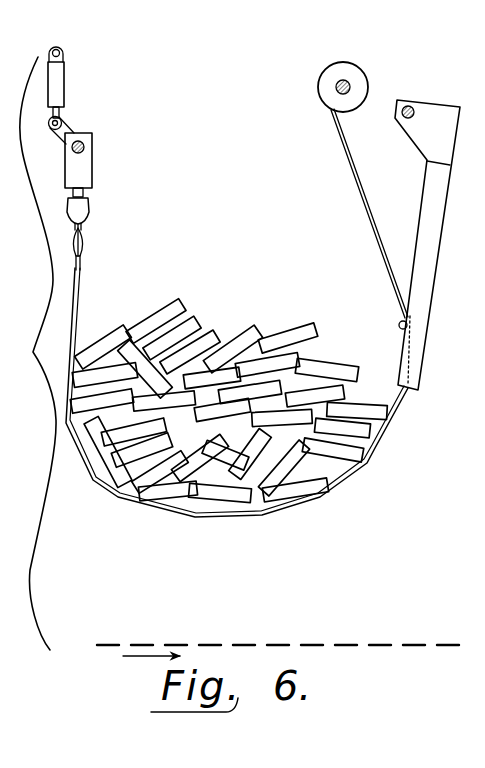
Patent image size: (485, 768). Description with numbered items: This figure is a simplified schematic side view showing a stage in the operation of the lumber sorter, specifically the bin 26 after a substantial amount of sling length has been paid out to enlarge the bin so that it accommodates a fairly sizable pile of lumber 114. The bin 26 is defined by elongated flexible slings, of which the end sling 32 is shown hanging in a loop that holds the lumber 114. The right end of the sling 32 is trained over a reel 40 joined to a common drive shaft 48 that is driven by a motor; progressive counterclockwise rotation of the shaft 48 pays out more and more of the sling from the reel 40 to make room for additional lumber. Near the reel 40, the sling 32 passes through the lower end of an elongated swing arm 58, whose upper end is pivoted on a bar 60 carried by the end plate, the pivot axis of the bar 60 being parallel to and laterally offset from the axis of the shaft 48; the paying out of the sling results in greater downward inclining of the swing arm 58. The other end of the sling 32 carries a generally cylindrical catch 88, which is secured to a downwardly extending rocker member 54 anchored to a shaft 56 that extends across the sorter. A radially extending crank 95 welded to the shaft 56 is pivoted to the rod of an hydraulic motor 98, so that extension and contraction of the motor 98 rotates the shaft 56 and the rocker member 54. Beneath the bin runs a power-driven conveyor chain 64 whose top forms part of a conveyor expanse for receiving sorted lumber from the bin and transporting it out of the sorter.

The bin 26 is at (214, 110).
The hydraulic motor 98 is at (65, 77).
The crank 95 is at (62, 121).
The shaft 56 is at (92, 143).
The rocker member 54 is at (93, 165).
The catch 88 is at (89, 206).
The sling 32 is at (80, 313).
The pile of lumber 114 is at (251, 306).
The reel 40 is at (320, 88).
The drive shaft 48 is at (349, 92).
The swing arm 58 is at (420, 205).
The bar 60 is at (412, 107).
The conveyor chain 64 is at (277, 641).